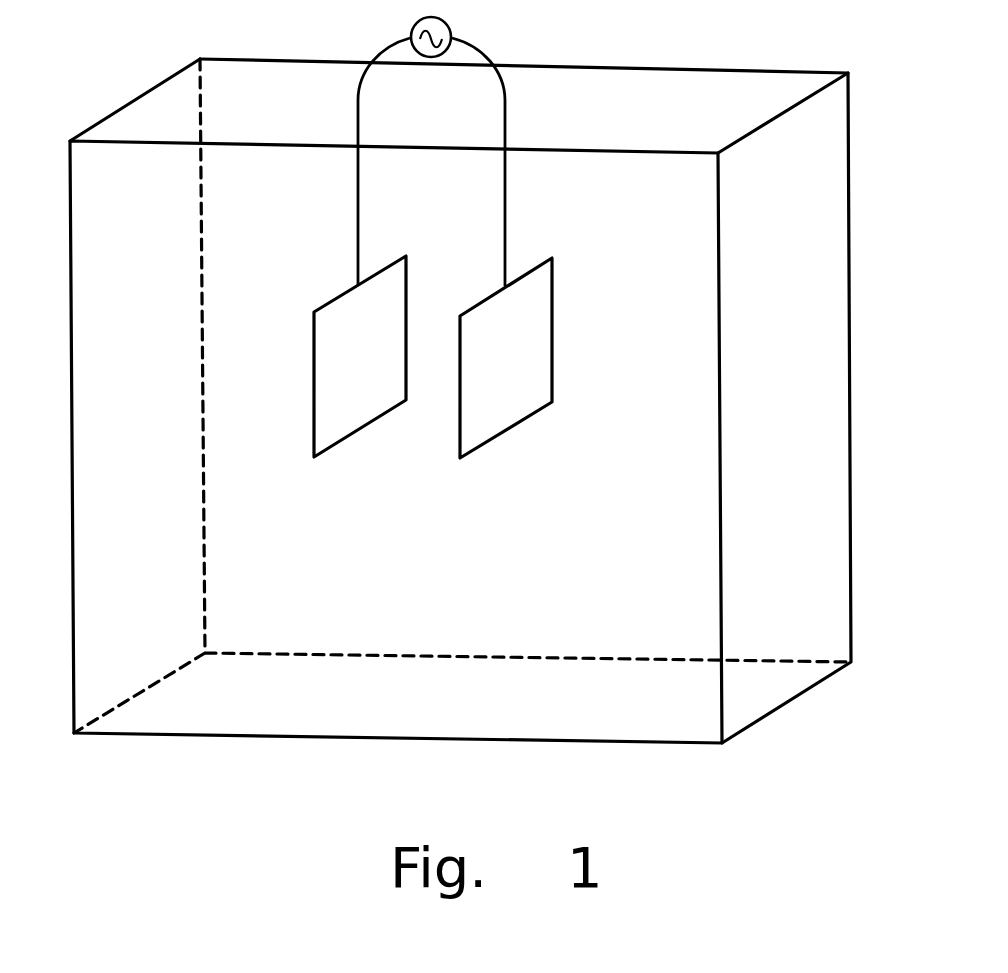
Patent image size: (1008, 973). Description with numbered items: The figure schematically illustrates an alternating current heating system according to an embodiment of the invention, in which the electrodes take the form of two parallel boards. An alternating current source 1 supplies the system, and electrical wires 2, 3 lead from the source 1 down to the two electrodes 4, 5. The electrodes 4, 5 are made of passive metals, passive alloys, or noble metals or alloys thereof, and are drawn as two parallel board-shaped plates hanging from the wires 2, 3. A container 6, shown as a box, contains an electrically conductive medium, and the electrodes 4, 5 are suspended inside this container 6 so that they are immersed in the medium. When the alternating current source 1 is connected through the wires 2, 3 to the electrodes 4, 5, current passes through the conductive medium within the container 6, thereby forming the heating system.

The alternating current source 1 is at (449, 25).
The electrical wire 2 is at (357, 100).
The electrical wire 3 is at (506, 106).
The electrode 4 is at (523, 358).
The electrode 5 is at (377, 303).
The container 6 is at (850, 316).